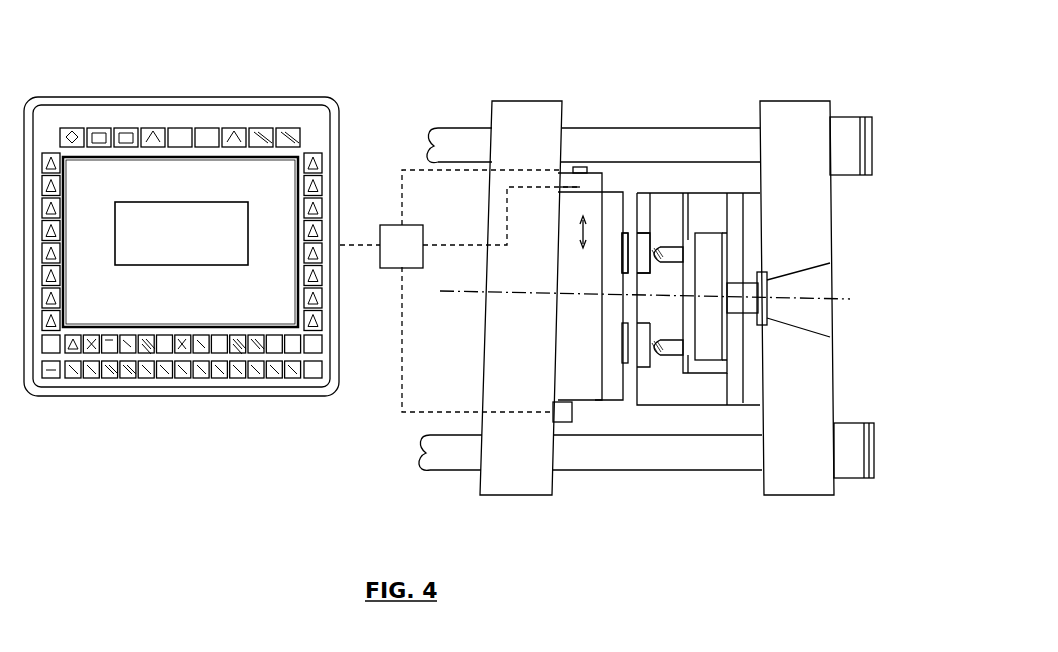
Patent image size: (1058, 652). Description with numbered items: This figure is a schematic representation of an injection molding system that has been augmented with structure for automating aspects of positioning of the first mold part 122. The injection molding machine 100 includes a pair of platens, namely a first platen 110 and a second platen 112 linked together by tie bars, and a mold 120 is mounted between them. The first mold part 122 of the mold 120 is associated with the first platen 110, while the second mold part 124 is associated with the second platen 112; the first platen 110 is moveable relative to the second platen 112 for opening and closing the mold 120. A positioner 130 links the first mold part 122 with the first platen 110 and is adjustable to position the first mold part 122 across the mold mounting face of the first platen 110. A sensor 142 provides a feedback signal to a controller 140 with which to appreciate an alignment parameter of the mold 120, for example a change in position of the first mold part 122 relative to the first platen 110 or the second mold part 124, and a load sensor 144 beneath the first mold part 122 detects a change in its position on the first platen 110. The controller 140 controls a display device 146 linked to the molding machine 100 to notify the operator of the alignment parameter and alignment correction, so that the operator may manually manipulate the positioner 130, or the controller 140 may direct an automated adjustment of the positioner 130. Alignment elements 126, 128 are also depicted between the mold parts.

The injection molding machine 100 is at (412, 514).
The first platen 110 is at (533, 115).
The second platen 112 is at (788, 137).
The mold 120 is at (590, 78).
The first mold part 122 is at (617, 172).
The second mold part 124 is at (690, 172).
The first alignment element 126 is at (622, 248).
The second alignment element 128 is at (652, 248).
The positioner 130 is at (578, 188).
The controller 140 is at (405, 250).
The sensor 142 is at (585, 165).
The load sensor 144 is at (563, 418).
The display device 146 is at (318, 123).